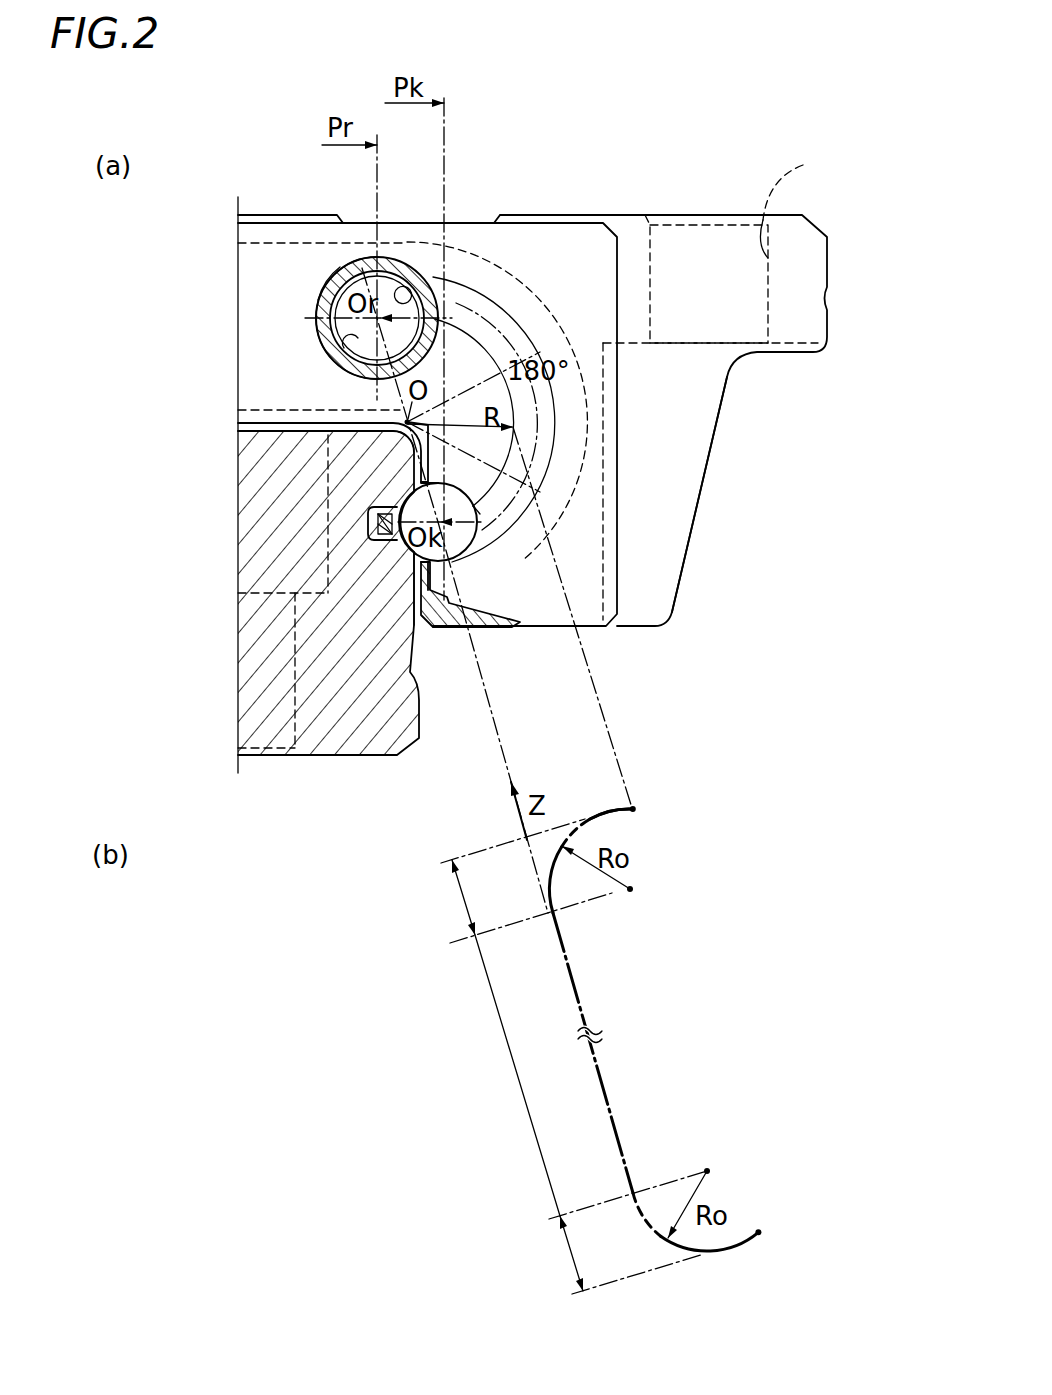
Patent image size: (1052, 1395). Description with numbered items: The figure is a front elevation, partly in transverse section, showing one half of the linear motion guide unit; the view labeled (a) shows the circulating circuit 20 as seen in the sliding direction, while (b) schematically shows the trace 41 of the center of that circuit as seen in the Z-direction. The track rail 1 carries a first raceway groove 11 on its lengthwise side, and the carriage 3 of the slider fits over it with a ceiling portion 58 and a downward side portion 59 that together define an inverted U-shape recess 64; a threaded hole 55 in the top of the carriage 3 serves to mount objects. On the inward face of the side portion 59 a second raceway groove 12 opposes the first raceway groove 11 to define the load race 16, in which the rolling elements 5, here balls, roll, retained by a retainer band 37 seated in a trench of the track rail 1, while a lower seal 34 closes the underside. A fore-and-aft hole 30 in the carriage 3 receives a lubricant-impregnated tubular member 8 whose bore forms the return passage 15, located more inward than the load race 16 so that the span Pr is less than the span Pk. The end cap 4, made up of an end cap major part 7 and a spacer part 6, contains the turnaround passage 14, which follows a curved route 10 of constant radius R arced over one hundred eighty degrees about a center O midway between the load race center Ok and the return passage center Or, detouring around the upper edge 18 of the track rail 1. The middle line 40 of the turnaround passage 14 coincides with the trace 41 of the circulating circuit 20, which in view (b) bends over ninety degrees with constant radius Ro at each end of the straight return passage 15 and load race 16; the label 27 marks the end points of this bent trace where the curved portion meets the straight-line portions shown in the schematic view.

The track rail 1 is at (368, 700).
The carriage 3 is at (643, 260).
The end cap 4 is at (514, 232).
The rolling element 5 is at (357, 262).
The spacer part 6 is at (540, 313).
The end cap major part 7 is at (547, 242).
The tubular member 8 is at (336, 278).
The curved route 10 is at (548, 407).
The first raceway groove 11 is at (405, 553).
The second raceway groove 12 is at (478, 530).
The turnaround passage 14 is at (547, 430).
The return passage 15 is at (390, 262).
The load race 16 is at (468, 540).
The upper edge of the track rail 18 is at (387, 453).
The circulating circuit 20 is at (343, 337).
The hook end 27 is at (513, 447).
The fore-and-aft hole 30 is at (322, 302).
The lower seal 34 is at (450, 623).
The retainer band 37 is at (367, 527).
The middle line of the turnaround passage 40 is at (470, 533).
The trace of center of the circulating circuit 41 is at (605, 812).
The threaded hole 55 is at (798, 198).
The ceiling portion 58 is at (632, 243).
The side portion 59 is at (685, 443).
The inverted U-shape recess 64 is at (332, 425).